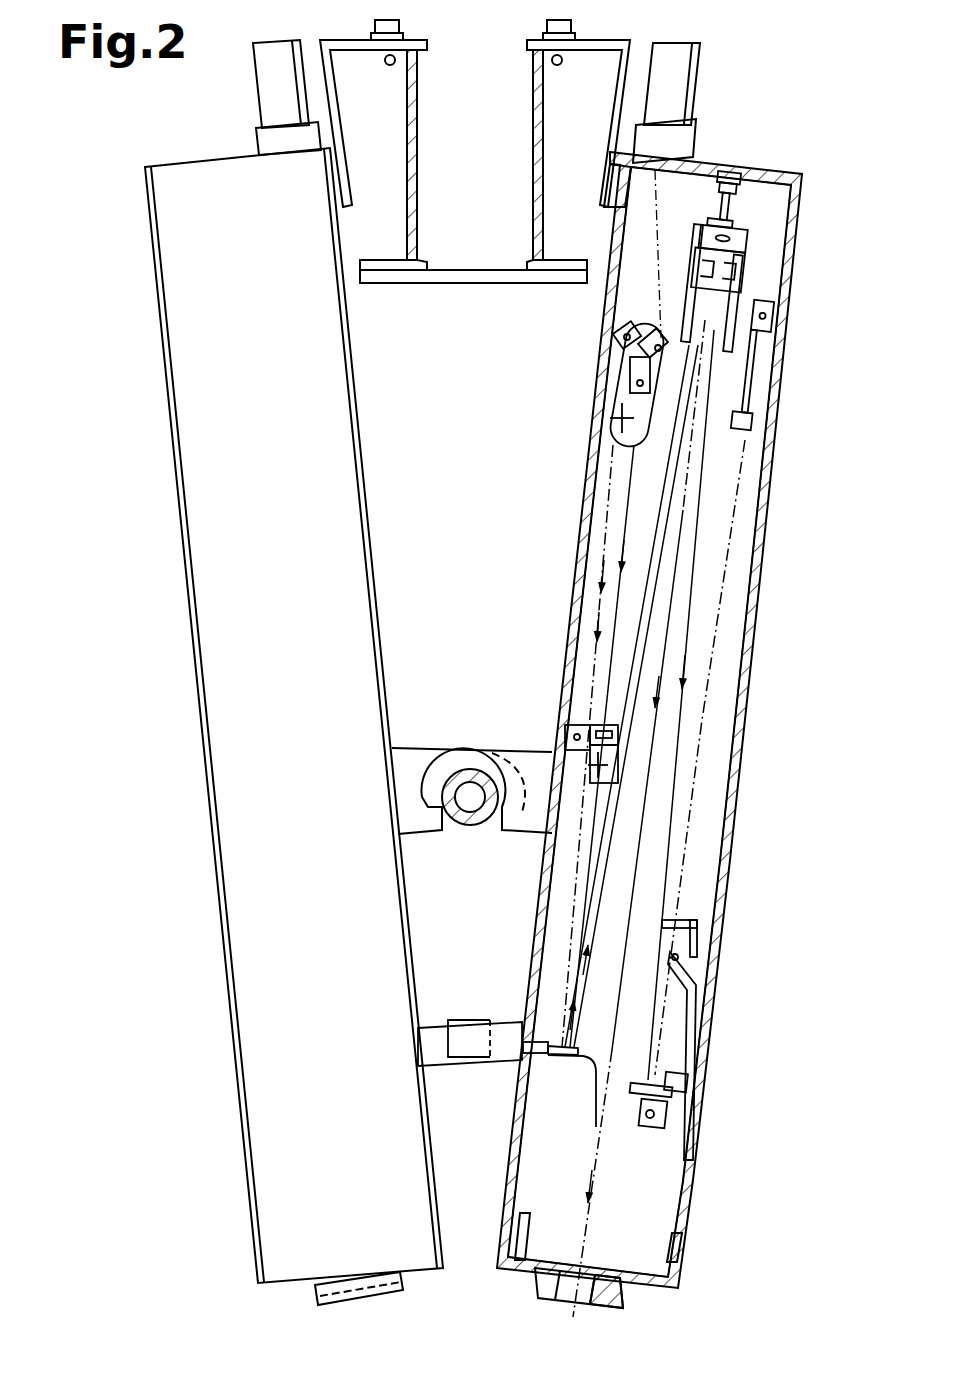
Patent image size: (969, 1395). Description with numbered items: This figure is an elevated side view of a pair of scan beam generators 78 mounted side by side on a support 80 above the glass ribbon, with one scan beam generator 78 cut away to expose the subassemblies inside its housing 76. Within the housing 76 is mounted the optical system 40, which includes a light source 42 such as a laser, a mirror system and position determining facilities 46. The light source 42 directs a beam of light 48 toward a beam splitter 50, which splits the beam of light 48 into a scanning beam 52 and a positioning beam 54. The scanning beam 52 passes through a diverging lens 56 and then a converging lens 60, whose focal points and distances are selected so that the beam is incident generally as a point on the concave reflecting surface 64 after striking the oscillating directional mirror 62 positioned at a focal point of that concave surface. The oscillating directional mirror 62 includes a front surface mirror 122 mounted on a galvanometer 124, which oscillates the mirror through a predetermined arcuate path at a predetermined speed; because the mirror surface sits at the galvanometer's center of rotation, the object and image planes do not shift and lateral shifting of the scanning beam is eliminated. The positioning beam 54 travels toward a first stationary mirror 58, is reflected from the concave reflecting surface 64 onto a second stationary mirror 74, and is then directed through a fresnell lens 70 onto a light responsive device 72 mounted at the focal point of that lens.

The optical system 40 is at (712, 494).
The light source 42 is at (710, 65).
The position determining facilities 46 is at (712, 771).
The beam of light 48 is at (663, 222).
The beam splitter 50 is at (650, 340).
The scanning beam 52 is at (630, 490).
The positioning beam 54 is at (607, 500).
The diverging lens 56 is at (641, 393).
The first stationary mirror 58 is at (625, 325).
The converging lens 60 is at (590, 727).
The oscillating directional mirror 62 is at (597, 1120).
The concave reflecting surface 64 is at (745, 298).
The fresnell lens 70 is at (684, 921).
The light responsive device 72 is at (768, 422).
The second stationary mirror 74 is at (632, 1092).
The housing 76 is at (793, 255).
The scan beam generator 78 is at (147, 387).
The support 80 is at (462, 58).
The front surface mirror 122 is at (578, 1044).
The galvanometer 124 is at (538, 1058).